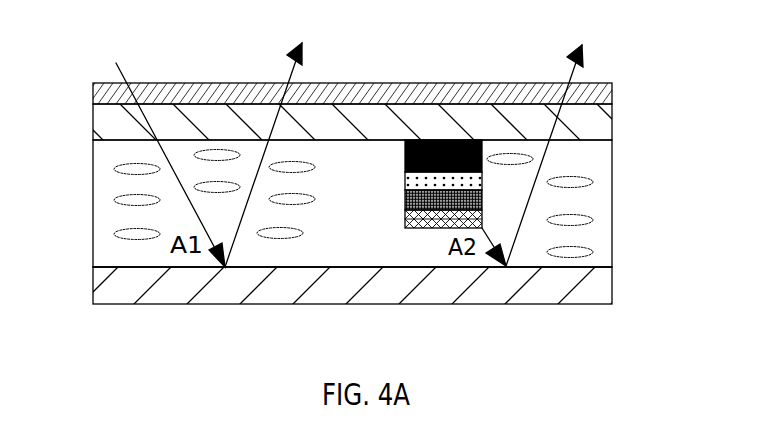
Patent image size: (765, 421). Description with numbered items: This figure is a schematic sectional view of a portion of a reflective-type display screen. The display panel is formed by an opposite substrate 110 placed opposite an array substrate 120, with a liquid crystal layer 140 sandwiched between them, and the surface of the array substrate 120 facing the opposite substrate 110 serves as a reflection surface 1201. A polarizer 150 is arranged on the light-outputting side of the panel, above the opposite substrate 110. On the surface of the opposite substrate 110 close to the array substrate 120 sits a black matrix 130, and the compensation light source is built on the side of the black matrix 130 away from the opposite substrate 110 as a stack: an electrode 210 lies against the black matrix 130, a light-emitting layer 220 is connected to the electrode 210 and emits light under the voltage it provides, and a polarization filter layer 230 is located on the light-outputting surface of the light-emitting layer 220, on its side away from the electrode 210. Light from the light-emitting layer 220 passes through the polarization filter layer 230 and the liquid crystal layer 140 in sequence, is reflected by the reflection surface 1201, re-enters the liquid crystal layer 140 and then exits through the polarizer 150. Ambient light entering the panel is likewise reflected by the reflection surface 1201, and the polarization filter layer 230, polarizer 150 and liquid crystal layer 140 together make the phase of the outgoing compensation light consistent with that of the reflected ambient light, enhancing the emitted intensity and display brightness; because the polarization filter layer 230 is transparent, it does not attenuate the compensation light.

The opposite substrate 110 is at (601, 125).
The array substrate 120 is at (601, 284).
The reflection surface 1201 is at (152, 267).
The black matrix 130 is at (471, 140).
The liquid crystal layer 140 is at (604, 201).
The polarizer 150 is at (612, 86).
The electrode 210 is at (405, 185).
The light-emitting layer 220 is at (405, 207).
The polarization filter layer 230 is at (408, 225).